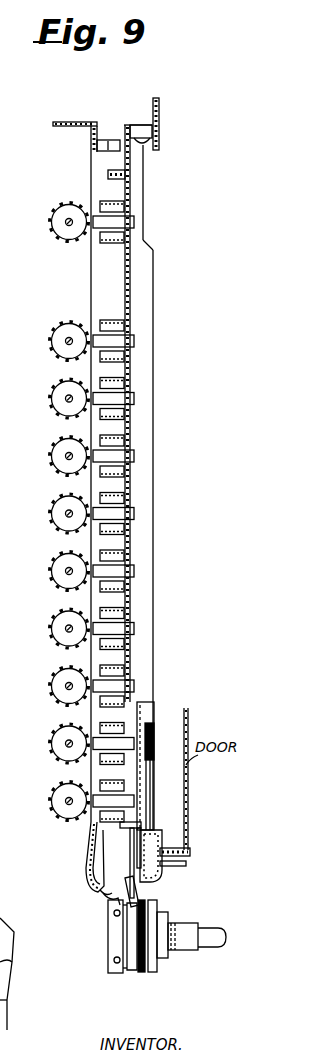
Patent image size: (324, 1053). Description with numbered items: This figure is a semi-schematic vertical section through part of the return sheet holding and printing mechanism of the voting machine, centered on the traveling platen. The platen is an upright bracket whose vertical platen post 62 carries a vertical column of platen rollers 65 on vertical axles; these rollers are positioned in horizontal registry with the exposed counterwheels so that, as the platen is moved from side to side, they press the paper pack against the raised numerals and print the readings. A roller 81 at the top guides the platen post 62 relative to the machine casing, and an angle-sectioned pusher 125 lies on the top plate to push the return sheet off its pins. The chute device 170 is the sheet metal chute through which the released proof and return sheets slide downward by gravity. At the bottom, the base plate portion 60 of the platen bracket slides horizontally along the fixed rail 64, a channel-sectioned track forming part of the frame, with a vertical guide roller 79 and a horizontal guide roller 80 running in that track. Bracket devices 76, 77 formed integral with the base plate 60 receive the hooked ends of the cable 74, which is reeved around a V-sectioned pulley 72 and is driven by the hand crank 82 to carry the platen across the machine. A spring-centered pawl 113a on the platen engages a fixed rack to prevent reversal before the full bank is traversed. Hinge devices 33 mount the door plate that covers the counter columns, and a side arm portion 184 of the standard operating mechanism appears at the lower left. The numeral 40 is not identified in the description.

The pusher 125 is at (65, 122).
The roller 81 is at (143, 128).
The chute device 170 is at (118, 172).
The frame 40 is at (90, 292).
The platen rollers 65 is at (120, 341).
The platen post 62 is at (147, 424).
The spring-centered pawl 113a is at (147, 778).
The fixed rail 64 is at (160, 835).
The hinge devices 33 is at (186, 855).
The horizontal guide roller 80 is at (163, 866).
The bracket device 76 is at (145, 897).
The base plate portion 60 is at (132, 880).
The vertical guide roller 79 is at (108, 884).
The bracket device 77 is at (112, 896).
The side arm portion 184 is at (14, 962).
The hand crank 82 is at (211, 942).
The V-sectioned pulley 72 is at (137, 962).
The cable 74 is at (143, 972).